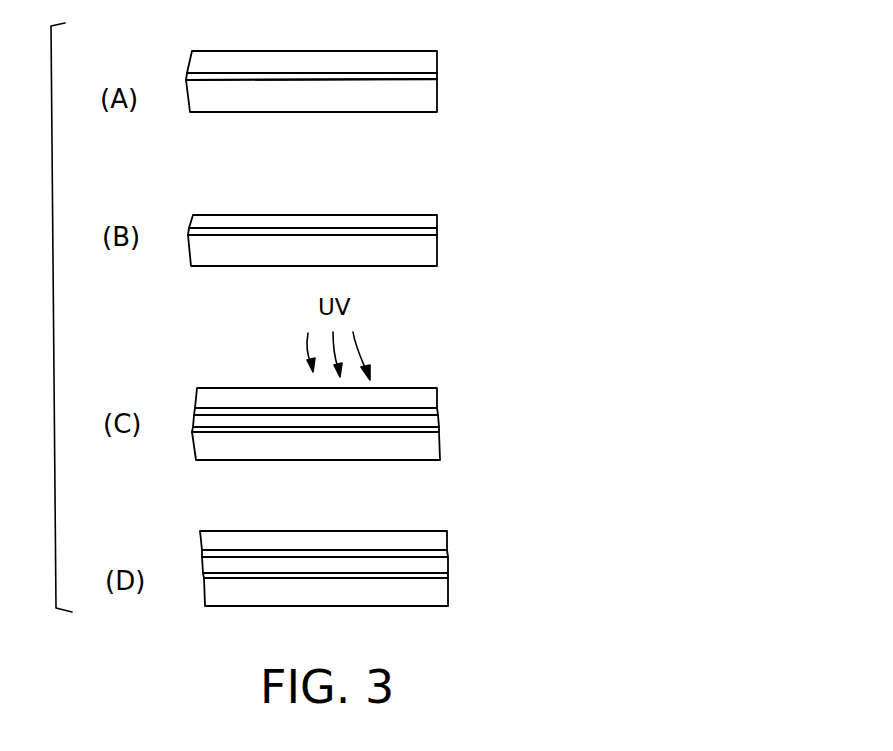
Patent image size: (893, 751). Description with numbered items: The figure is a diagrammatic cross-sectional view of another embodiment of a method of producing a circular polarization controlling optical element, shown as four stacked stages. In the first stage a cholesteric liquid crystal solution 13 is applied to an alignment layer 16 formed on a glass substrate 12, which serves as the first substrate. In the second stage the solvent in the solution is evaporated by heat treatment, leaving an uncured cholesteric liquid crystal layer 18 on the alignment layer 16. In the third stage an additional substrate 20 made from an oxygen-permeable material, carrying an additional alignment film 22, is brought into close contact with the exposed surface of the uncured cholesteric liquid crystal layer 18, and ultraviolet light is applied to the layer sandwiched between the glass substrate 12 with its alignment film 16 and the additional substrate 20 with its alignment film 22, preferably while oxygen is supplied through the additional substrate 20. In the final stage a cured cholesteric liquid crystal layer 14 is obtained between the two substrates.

The glass substrate 12 is at (430, 100).
The cholesteric liquid crystal solution 13 is at (430, 66).
The cured cholesteric liquid crystal layer 14 is at (443, 565).
The alignment layer 16 is at (437, 77).
The uncured cholesteric liquid crystal layer 18 is at (437, 220).
The additional substrate 20 is at (428, 400).
The additional alignment film 22 is at (437, 405).